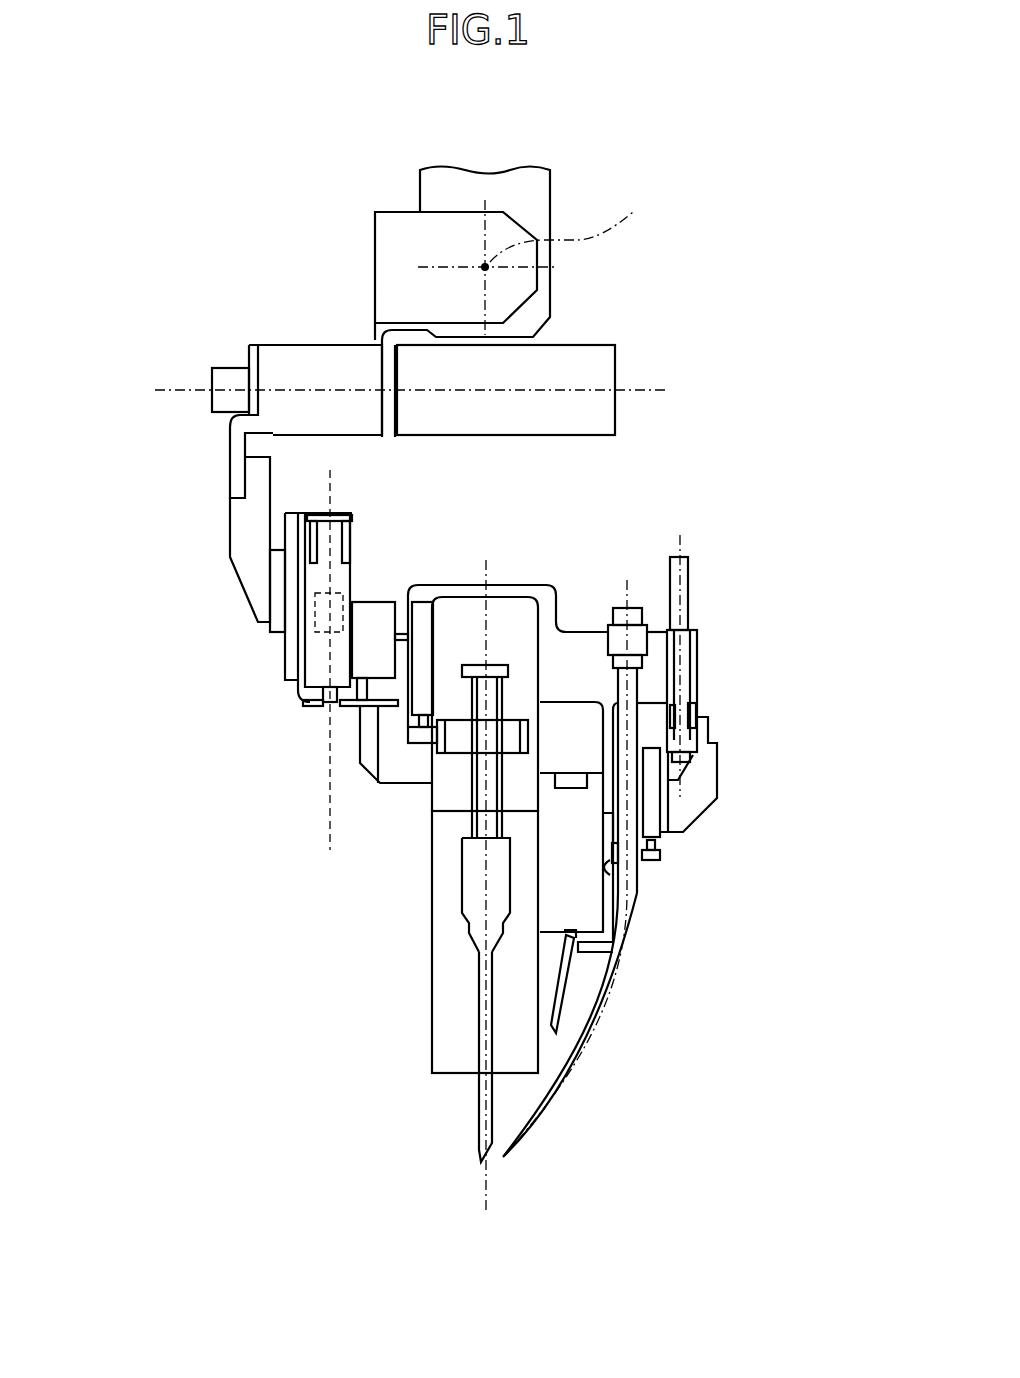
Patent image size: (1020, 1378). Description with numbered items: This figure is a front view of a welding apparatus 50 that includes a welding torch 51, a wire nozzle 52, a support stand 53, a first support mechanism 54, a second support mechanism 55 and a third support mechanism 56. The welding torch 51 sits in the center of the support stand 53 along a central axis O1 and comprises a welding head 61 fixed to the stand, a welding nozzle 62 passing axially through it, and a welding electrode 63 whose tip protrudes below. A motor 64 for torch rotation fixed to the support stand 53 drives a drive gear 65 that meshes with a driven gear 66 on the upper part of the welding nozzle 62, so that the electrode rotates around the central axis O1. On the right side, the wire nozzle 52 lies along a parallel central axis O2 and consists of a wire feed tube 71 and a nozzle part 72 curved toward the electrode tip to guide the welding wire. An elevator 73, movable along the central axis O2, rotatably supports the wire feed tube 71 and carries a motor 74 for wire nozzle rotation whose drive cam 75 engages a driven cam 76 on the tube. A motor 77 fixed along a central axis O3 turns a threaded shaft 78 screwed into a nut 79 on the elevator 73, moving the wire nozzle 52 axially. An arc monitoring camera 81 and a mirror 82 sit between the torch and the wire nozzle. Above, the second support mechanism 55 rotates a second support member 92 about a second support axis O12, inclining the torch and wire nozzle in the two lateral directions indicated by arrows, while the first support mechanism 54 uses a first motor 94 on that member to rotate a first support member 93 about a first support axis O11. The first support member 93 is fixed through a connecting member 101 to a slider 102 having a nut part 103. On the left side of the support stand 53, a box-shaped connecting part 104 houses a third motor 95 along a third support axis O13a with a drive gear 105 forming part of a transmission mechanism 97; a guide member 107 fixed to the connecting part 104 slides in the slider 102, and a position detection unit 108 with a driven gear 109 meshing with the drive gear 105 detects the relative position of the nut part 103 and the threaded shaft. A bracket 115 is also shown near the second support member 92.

The welding apparatus 50 is at (780, 370).
The welding torch 51 is at (427, 945).
The wire nozzle 52 is at (640, 926).
The support stand 53 is at (447, 578).
The first support mechanism 54 is at (262, 328).
The second support mechanism 55 is at (402, 192).
The third support mechanism 56 is at (365, 515).
The welding head 61 is at (432, 1037).
The welding nozzle 62 is at (472, 827).
The welding electrode 63 is at (477, 1147).
The motor for torch rotation 64 is at (425, 607).
The drive gear 65 is at (408, 742).
The driven gear 66 is at (508, 668).
The wire feed tube 71 is at (638, 875).
The nozzle part 72 is at (540, 1115).
The elevator 73 is at (687, 780).
The motor for wire nozzle rotation 74 is at (656, 822).
The drive cam 75 is at (661, 855).
The driven cam 76 is at (612, 866).
The motor for moving the wire nozzle 77 is at (690, 592).
The threaded shaft 78 is at (686, 665).
The nut 79 is at (696, 712).
The arc monitoring camera 81 is at (573, 717).
The mirror 82 is at (572, 992).
The second support member 92 is at (385, 252).
The first support member 93 is at (236, 443).
The first motor 94 is at (590, 350).
The third motor 95 is at (312, 657).
The transmission mechanism 97 is at (292, 723).
The connecting member 101 is at (242, 532).
The slider 102 is at (275, 585).
The nut part 103 is at (353, 597).
The connecting part 104 is at (345, 513).
The drive gear 105 is at (308, 712).
The guide member 107 is at (293, 518).
The position detection unit 108 is at (380, 610).
The driven gear 109 is at (360, 757).
The mounting bracket 115 is at (452, 170).
The central axis O1 is at (487, 560).
The central axis O2 is at (627, 580).
The central axis O3 is at (683, 535).
The first support axis O11 is at (640, 388).
The second support axis O12 is at (585, 231).
The third support axis O13a is at (330, 773).